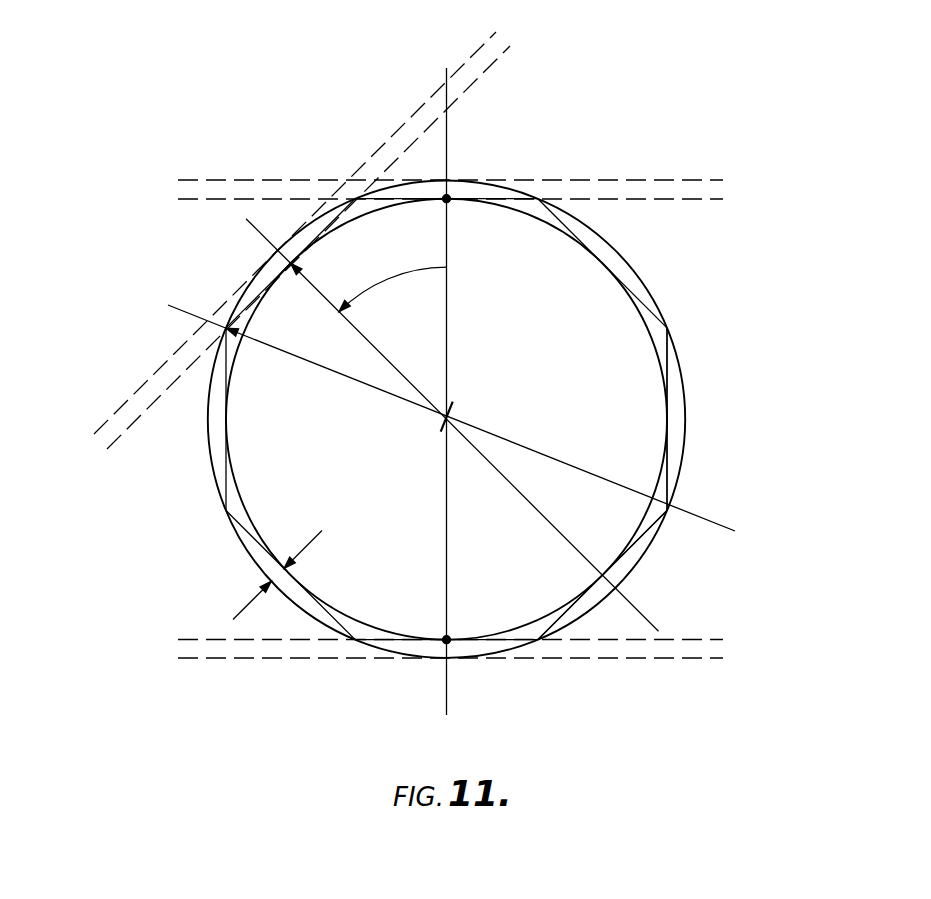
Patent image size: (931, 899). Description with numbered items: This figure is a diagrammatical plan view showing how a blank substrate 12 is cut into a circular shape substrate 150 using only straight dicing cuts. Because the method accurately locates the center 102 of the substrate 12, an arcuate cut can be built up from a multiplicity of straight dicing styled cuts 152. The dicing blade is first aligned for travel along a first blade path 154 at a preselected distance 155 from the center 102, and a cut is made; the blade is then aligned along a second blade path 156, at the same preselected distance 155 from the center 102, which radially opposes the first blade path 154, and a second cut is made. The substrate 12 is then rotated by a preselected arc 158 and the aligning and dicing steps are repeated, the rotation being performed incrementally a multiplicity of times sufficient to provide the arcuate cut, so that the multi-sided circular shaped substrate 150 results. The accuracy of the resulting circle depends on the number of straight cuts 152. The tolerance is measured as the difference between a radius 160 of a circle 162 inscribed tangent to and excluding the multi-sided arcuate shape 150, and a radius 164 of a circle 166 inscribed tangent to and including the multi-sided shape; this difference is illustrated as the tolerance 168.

The blank substrate 12 is at (577, 405).
The center of the substrate 102 is at (446, 418).
The circular shape substrate 150 is at (657, 288).
The straight dicing styled cuts 152 is at (637, 562).
The first blade path 154 is at (617, 191).
The preselected distance 155 is at (447, 309).
The second blade path 156 is at (615, 653).
The preselected arc 158 is at (360, 292).
The radius 160 is at (353, 323).
The circle 162 is at (518, 211).
The radius 164 is at (332, 371).
The circle 166 is at (210, 448).
The tolerance 168 is at (260, 570).